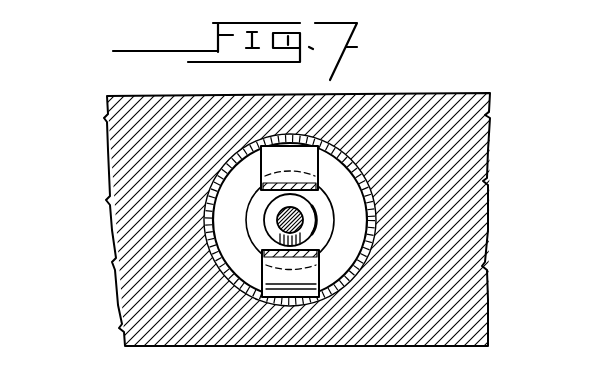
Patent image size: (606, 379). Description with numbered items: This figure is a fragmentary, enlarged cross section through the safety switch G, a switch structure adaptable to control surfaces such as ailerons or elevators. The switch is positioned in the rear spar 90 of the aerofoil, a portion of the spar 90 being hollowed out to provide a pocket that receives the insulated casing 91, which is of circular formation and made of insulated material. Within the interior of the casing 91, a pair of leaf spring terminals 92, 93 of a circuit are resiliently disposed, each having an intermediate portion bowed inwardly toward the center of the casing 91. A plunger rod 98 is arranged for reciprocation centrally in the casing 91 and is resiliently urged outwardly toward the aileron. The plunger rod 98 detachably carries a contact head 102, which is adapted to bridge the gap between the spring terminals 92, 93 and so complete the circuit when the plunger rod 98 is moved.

The rear spar 90 is at (435, 118).
The insulated casing 91 is at (270, 347).
The leaf spring terminal 92 is at (308, 163).
The leaf spring terminal 93 is at (308, 272).
The plunger rod 98 is at (300, 222).
The contact head 102 is at (262, 206).
The safety switch G is at (250, 223).